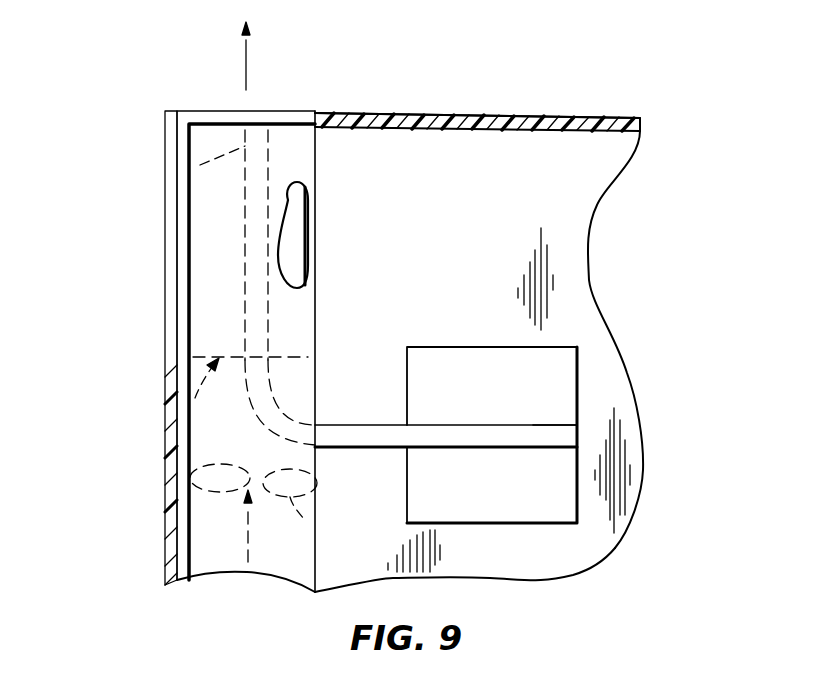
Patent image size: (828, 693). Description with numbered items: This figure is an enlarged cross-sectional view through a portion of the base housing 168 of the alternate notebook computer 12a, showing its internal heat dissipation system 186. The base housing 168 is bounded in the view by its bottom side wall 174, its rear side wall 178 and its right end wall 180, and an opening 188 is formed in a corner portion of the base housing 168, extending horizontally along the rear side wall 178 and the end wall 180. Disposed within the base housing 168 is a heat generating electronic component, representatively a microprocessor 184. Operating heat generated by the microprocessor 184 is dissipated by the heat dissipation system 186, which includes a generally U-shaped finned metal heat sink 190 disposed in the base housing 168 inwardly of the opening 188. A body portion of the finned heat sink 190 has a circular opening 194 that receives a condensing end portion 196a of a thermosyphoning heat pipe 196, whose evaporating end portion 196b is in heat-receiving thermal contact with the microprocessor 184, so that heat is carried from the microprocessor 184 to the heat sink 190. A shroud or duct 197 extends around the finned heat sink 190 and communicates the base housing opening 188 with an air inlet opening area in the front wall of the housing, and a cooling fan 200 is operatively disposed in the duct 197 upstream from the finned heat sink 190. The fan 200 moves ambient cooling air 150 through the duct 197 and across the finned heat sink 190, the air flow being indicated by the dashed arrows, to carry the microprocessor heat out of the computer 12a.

The notebook computer 12a is at (570, 83).
The ambient cooling air 150 is at (245, 57).
The base housing 168 is at (618, 116).
The bottom side wall 174 is at (512, 187).
The rear side wall 178 is at (455, 115).
The right end wall 180 is at (167, 532).
The microprocessor 184 is at (508, 392).
The heat dissipation system 186 is at (350, 278).
The opening 188 is at (296, 118).
The finned metal heat sink 190 is at (292, 237).
The circular opening 194 is at (267, 182).
The thermosyphoning heat pipe 196 is at (330, 422).
The condensing end portion 196a is at (189, 163).
The evaporating end portion 196b is at (533, 425).
The shroud or duct 197 is at (186, 293).
The cooling fan 200 is at (300, 521).